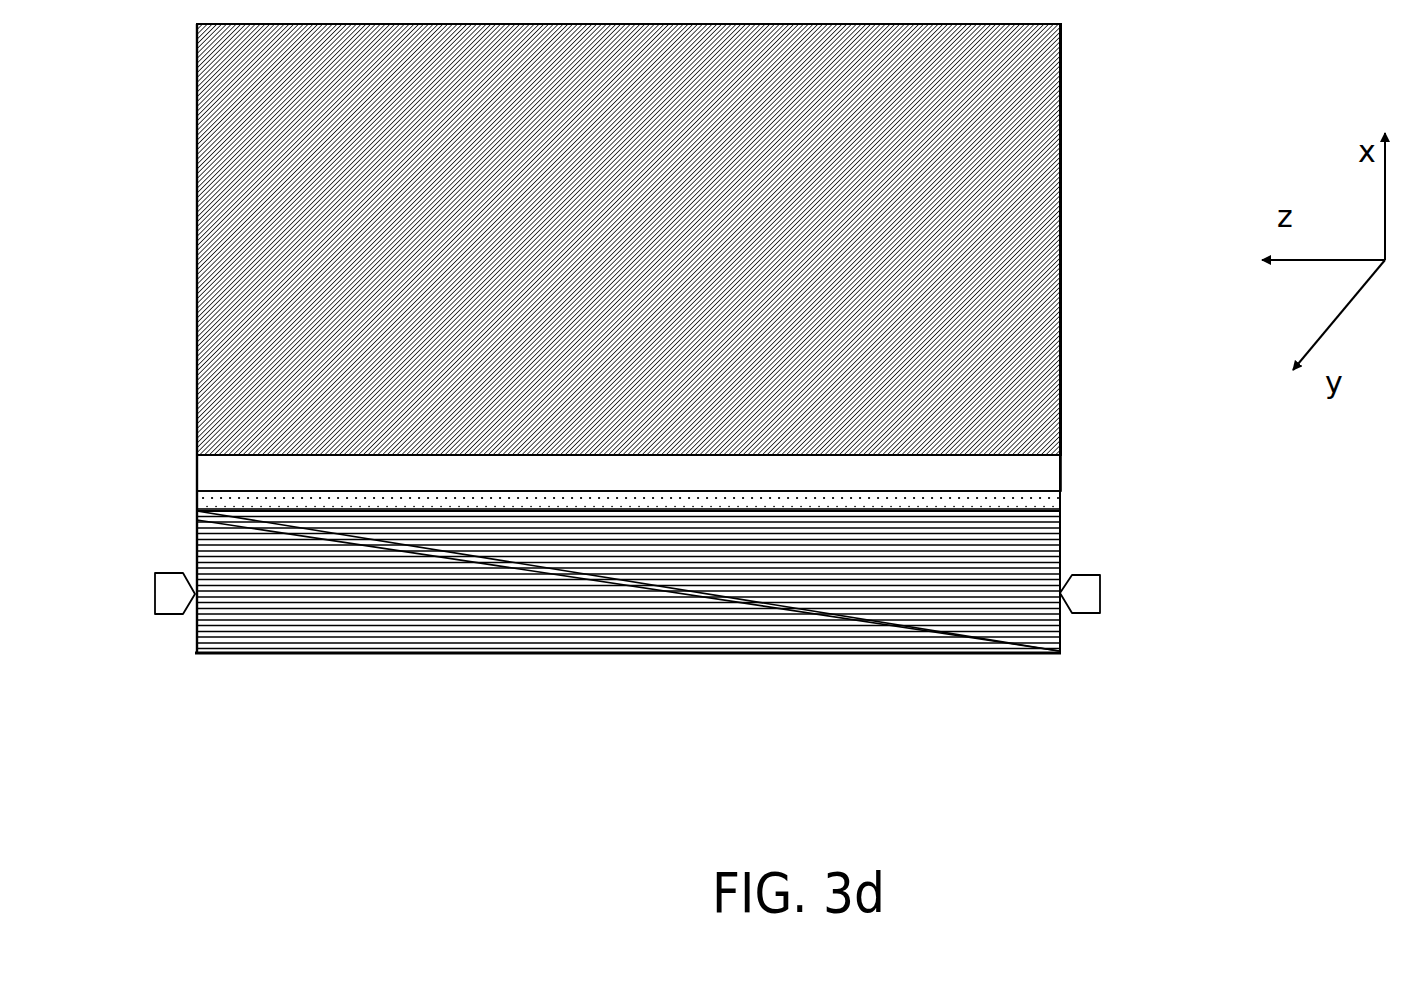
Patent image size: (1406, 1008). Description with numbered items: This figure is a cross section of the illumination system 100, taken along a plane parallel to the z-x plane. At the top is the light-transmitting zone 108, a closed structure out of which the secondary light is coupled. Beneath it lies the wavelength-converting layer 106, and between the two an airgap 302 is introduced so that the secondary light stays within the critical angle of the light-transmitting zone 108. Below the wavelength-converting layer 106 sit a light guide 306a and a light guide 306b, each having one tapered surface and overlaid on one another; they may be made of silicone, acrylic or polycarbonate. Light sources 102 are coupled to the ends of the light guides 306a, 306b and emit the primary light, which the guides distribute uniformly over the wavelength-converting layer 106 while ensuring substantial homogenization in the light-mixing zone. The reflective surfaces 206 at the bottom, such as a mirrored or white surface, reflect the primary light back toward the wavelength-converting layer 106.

The illumination system 100 is at (620, 435).
The light sources 102 is at (155, 594).
The wavelength-converting layer 106 is at (197, 496).
The light-transmitting zone 108 is at (641, 212).
The reflective surfaces 206 is at (629, 654).
The airgap 302 is at (1061, 458).
The light guide 306a is at (628, 581).
The light guide 306b is at (843, 583).